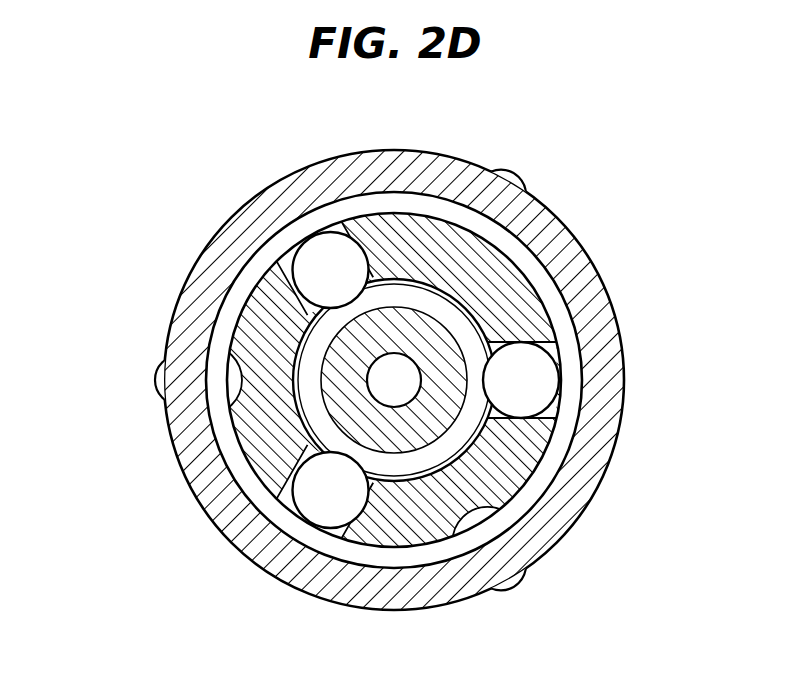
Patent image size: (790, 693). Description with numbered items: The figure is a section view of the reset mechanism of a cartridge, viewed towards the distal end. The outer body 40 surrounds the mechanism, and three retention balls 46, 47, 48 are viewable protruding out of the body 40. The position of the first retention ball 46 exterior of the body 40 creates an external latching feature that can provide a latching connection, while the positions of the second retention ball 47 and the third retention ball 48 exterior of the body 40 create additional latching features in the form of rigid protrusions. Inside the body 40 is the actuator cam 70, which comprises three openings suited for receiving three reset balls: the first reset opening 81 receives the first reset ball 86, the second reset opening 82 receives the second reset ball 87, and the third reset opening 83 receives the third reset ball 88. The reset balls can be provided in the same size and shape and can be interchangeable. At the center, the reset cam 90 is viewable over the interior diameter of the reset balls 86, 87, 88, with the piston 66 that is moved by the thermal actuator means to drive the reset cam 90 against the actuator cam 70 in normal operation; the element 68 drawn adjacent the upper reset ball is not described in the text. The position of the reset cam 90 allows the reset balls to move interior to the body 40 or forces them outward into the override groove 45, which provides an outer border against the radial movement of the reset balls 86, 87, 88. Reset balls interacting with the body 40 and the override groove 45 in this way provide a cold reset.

The body 40 is at (193, 505).
The override groove 45 is at (223, 294).
The first retention ball 46 is at (160, 378).
The second retention ball 47 is at (512, 176).
The third retention ball 48 is at (525, 590).
The piston 66 is at (393, 377).
The ball 68 is at (323, 257).
The actuator cam 70 is at (505, 452).
The first reset opening 81 is at (380, 500).
The second reset opening 82 is at (551, 330).
The third reset opening 83 is at (226, 292).
The first reset ball 86 is at (330, 492).
The second reset ball 87 is at (523, 383).
The third reset ball 88 is at (236, 300).
The reset cam 90 is at (372, 322).